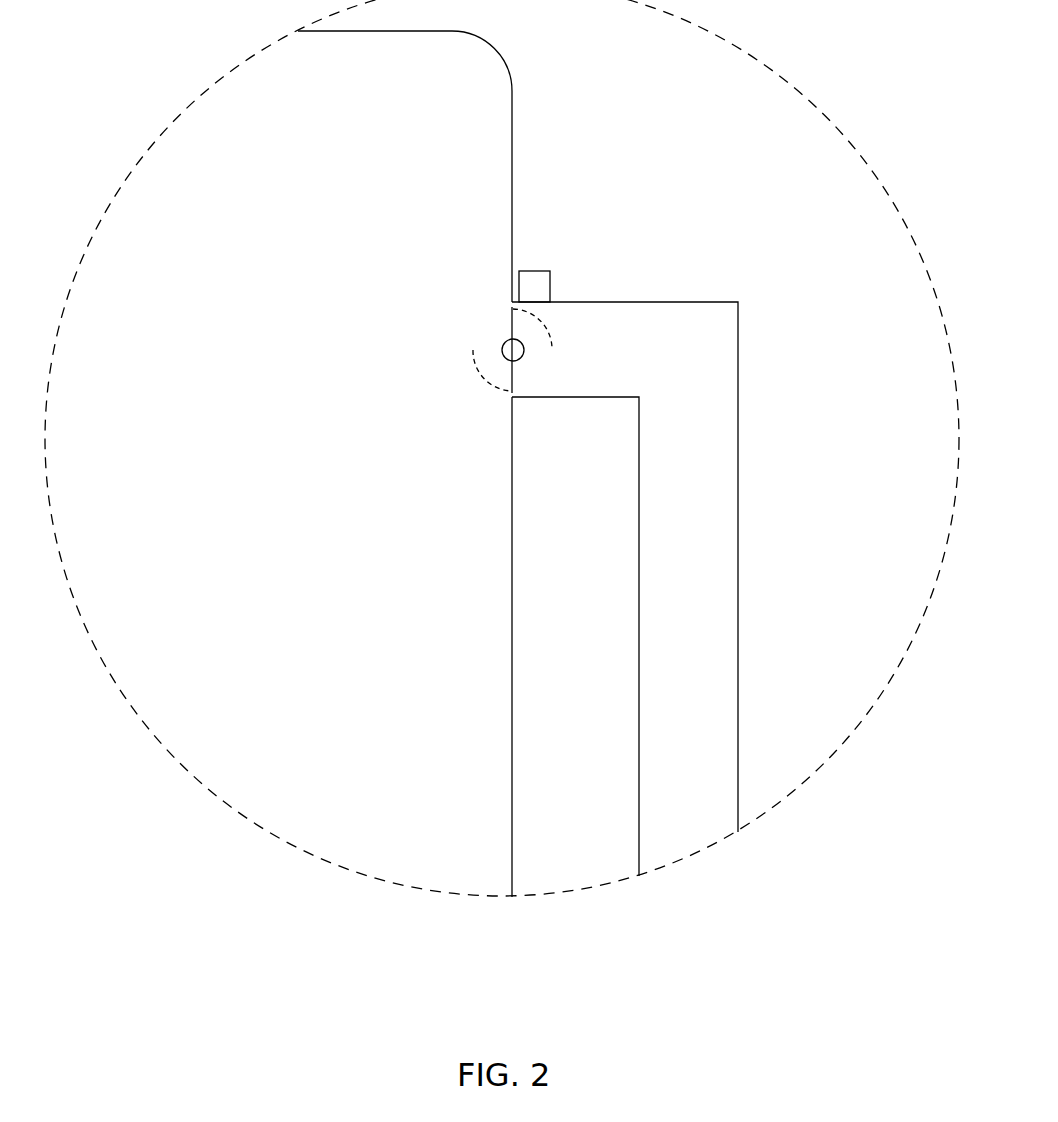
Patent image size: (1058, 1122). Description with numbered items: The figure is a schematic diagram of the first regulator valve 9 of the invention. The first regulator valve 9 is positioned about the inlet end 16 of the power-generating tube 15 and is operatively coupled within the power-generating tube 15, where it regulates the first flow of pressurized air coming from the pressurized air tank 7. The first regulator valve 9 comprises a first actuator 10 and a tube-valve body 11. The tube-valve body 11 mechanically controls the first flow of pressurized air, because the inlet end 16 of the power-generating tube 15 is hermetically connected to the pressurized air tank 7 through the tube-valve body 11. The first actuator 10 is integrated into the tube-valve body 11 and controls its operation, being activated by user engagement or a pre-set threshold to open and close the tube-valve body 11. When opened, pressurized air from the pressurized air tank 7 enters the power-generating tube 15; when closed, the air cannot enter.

The pressurized air tank 7 is at (508, 148).
The first regulator valve 9 is at (427, 302).
The first actuator 10 is at (530, 274).
The tube-valve body 11 is at (503, 345).
The power-generating tube 15 is at (733, 502).
The inlet end 16 is at (592, 272).